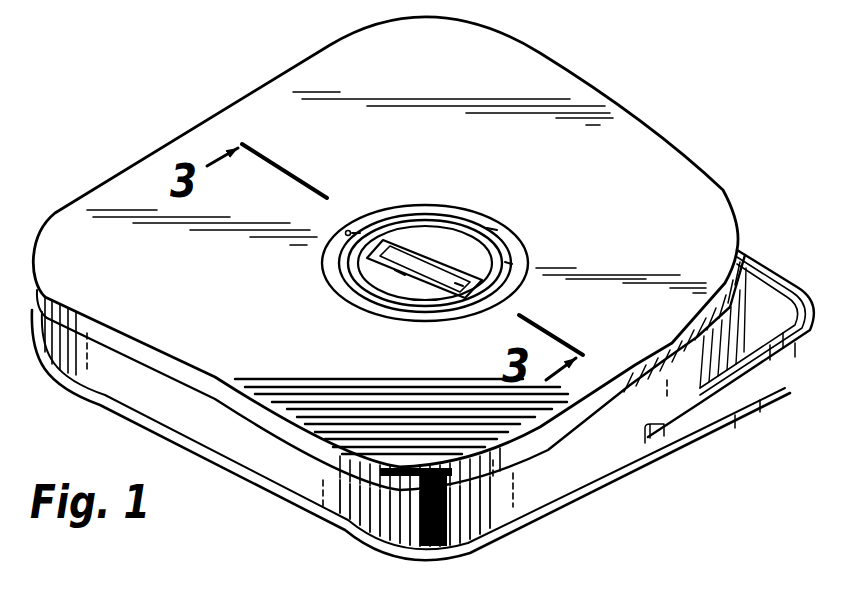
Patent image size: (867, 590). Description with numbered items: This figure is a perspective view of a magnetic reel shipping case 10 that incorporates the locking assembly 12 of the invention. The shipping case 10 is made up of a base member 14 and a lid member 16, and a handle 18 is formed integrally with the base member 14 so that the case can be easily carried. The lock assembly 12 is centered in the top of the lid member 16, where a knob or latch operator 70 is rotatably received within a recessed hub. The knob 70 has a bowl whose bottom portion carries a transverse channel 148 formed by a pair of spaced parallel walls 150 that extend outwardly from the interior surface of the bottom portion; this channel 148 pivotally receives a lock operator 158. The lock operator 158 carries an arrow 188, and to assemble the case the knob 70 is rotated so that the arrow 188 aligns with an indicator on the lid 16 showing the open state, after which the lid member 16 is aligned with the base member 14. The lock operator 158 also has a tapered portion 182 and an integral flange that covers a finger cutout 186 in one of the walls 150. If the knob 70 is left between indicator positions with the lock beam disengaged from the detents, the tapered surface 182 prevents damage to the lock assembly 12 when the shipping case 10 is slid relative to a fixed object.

The magnetic reel shipping case 10 is at (597, 68).
The locking assembly 12 is at (426, 261).
The base member 14 is at (551, 467).
The lid member 16 is at (703, 197).
The handle 18 is at (768, 381).
The knob or latch operator 70 is at (481, 244).
The transverse channel 148 is at (499, 277).
The spaced parallel walls 150 is at (437, 268).
The lock operator 158 is at (396, 253).
The tapered portion 182 is at (463, 289).
The finger cutout 186 is at (415, 243).
The arrow 188 is at (389, 279).